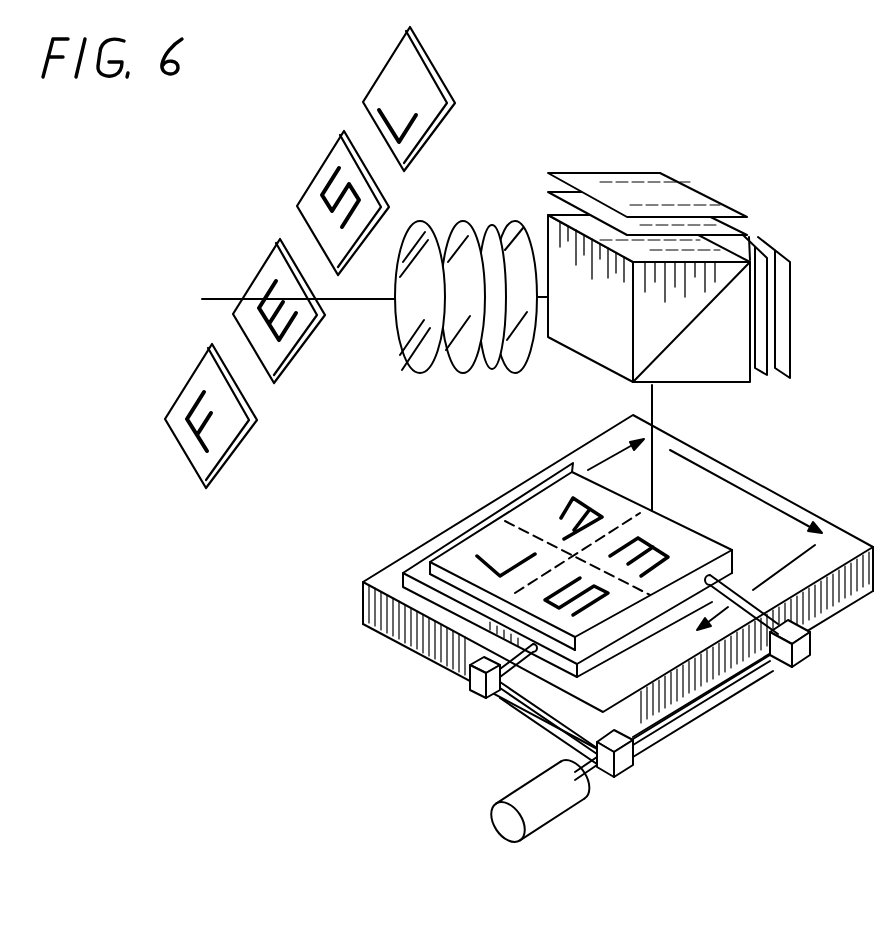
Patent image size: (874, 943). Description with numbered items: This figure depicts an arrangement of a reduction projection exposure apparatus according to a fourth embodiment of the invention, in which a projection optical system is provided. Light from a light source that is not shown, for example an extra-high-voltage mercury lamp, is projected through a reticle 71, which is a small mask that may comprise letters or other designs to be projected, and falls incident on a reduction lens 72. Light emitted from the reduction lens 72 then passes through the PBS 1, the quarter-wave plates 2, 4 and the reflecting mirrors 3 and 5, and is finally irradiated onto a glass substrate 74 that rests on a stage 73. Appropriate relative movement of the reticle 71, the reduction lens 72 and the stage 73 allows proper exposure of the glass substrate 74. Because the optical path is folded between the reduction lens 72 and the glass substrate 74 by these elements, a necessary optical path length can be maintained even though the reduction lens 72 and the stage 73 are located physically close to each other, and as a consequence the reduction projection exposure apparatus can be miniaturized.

The PBS 1 is at (583, 247).
The quarter-wave plate 2 is at (757, 370).
The reflecting mirror 3 is at (790, 317).
The quarter-wave plate 4 is at (740, 233).
The reflecting mirror 5 is at (706, 193).
The reticle 71 is at (188, 380).
The reduction lens 72 is at (395, 378).
The stage 73 is at (687, 653).
The glass substrate 74 is at (723, 547).